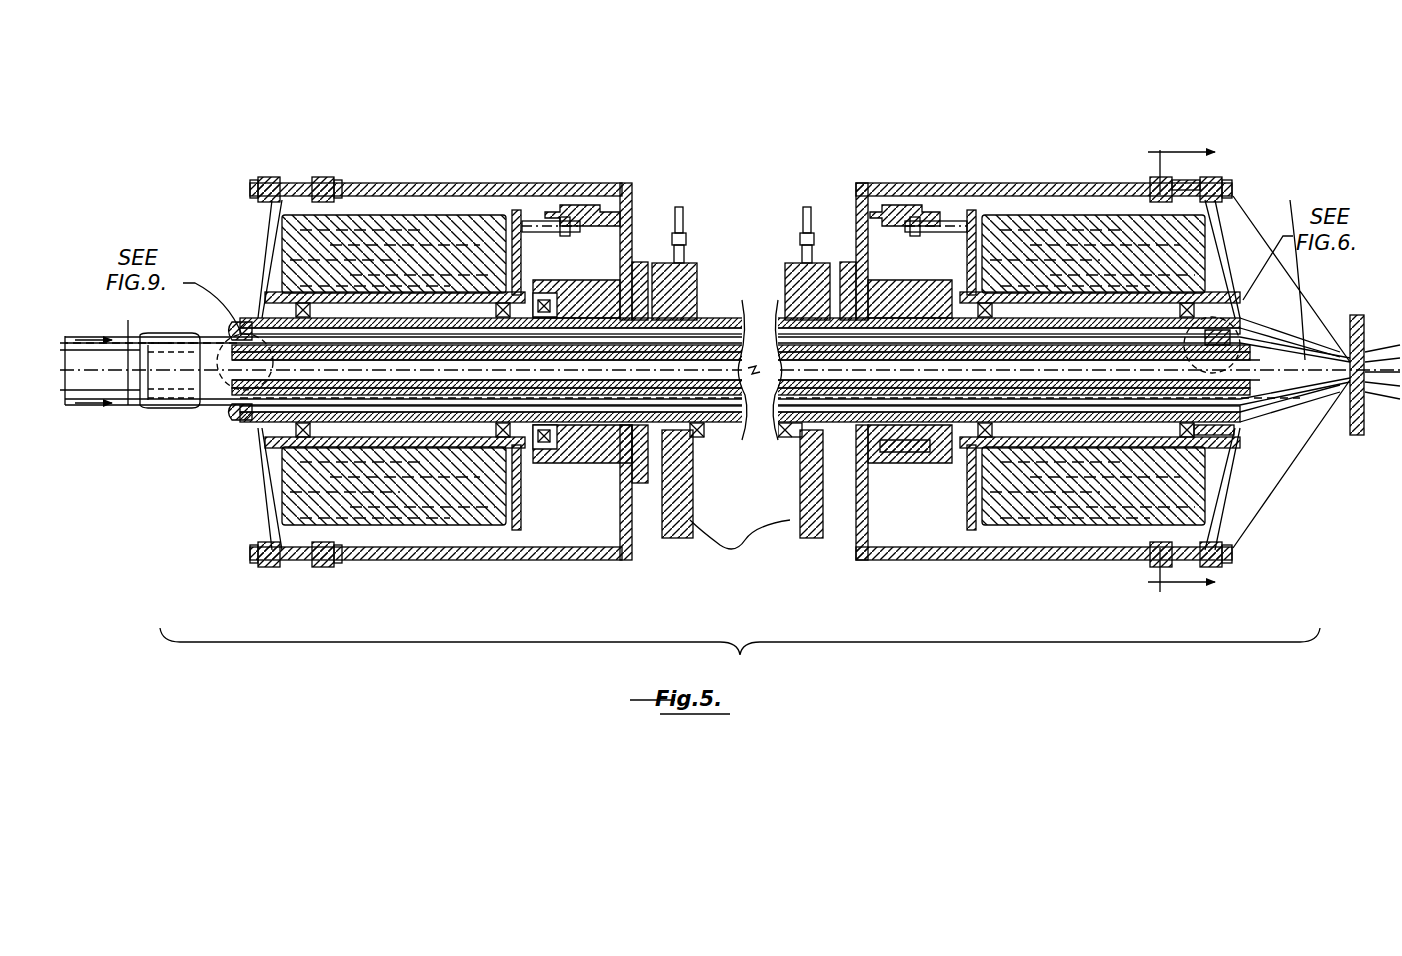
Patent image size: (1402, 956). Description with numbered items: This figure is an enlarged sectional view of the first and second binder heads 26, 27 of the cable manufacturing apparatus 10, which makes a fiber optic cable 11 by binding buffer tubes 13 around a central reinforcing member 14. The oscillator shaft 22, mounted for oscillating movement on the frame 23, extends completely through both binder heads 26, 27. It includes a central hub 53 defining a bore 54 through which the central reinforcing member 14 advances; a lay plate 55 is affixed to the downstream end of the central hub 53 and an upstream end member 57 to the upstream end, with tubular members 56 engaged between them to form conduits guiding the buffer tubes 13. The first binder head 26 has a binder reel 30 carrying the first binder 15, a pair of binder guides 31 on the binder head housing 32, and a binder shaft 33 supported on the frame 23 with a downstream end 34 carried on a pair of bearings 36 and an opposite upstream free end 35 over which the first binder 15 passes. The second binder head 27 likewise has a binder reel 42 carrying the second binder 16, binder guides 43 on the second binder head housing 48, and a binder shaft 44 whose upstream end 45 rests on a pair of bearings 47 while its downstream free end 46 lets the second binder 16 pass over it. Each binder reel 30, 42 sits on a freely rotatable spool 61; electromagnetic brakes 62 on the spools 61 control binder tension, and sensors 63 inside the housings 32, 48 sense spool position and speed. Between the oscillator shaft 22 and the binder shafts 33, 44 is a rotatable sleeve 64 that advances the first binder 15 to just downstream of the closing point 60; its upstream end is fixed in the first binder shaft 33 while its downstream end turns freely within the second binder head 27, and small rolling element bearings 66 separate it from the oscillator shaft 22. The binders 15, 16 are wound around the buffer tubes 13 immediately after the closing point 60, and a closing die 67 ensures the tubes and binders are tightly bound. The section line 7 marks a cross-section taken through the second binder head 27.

The section line 7- 7 is at (1160, 371).
The cable manufacturing apparatus 10 is at (1016, 128).
The fiber optic cable 11 is at (1397, 333).
The buffer tubes 13 is at (128, 345).
The central reinforcing member 14 is at (132, 398).
The first binder 15 is at (266, 236).
The second binder 16 is at (1256, 246).
The oscillator shaft 22 is at (205, 410).
The frame 23 is at (740, 548).
The first binder head 26 is at (562, 142).
The second binder head 27 is at (1112, 160).
The binder reel 30 is at (385, 526).
The binder guides 31 is at (270, 178).
The binder head housing 32 is at (446, 183).
The binder shaft 33 is at (637, 264).
The downstream end 34 is at (706, 440).
The upstream free end 35 is at (250, 428).
The bearings 36 is at (692, 302).
The binder reel 42 is at (1046, 526).
The binder guides 43 is at (1226, 188).
The binder shaft 44 is at (858, 262).
The upstream end 45 is at (780, 434).
The downstream free end 46 is at (1228, 438).
The bearings 47 is at (812, 292).
The second binder head housing 48 is at (1026, 183).
The central hub 53 is at (578, 385).
The bore 54 is at (592, 396).
The lay plate 55 is at (1248, 405).
The tubular members 56 is at (562, 322).
The upstream end member 57 is at (238, 338).
The closing point 60 is at (1330, 402).
The spool 61 is at (517, 212).
The electromagnetic brakes 62 is at (605, 212).
The sensors 63 is at (562, 220).
The rotatable sleeve 64 is at (385, 345).
The rolling element bearings 66 is at (268, 447).
The closing die 67 is at (1352, 436).